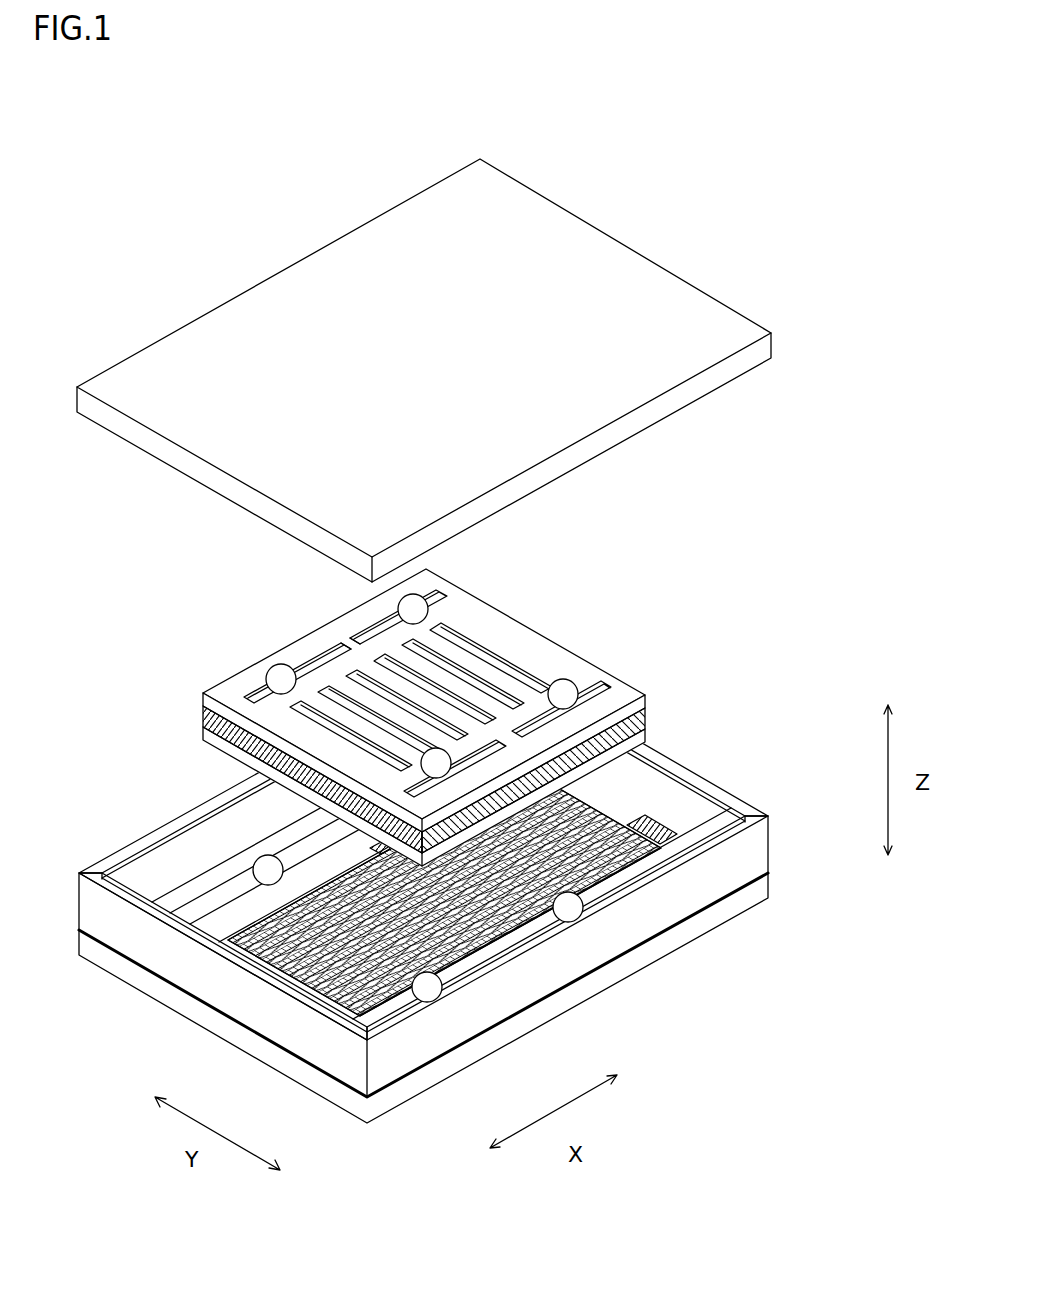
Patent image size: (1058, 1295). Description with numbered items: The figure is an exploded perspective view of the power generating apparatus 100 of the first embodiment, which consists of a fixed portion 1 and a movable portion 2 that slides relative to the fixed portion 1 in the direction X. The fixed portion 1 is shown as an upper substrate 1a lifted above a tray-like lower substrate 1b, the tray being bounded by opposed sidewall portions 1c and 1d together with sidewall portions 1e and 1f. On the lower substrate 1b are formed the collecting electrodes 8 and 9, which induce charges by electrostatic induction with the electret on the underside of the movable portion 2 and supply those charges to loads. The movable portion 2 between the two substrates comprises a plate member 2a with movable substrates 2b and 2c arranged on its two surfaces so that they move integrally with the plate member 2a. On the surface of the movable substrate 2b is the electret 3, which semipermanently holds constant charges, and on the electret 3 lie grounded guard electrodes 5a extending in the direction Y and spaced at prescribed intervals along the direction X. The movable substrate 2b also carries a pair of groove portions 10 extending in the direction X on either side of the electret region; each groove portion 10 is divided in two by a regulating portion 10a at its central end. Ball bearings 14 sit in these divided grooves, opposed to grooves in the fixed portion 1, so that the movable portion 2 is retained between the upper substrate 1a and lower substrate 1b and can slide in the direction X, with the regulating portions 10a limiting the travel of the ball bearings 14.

The power generating apparatus 100 is at (845, 140).
The fixed portion 1 is at (458, 641).
The upper substrate 1a is at (715, 317).
The lower substrate 1b is at (745, 900).
The sidewall portion 1c is at (203, 968).
The sidewall portion 1d is at (728, 790).
The sidewall portion 1e is at (150, 838).
The sidewall portion 1f is at (565, 962).
The movable portion 2 is at (452, 713).
The plate member 2a is at (642, 720).
The movable substrate 2b is at (433, 700).
The movable substrate 2c is at (451, 791).
The electret 3 is at (537, 650).
The guard electrodes 5a is at (460, 630).
The collecting electrode 8 is at (258, 957).
The collecting electrode 9 is at (292, 968).
The groove portions 10 is at (377, 635).
The regulating portion 10a is at (348, 645).
The ball bearings 14 is at (278, 670).